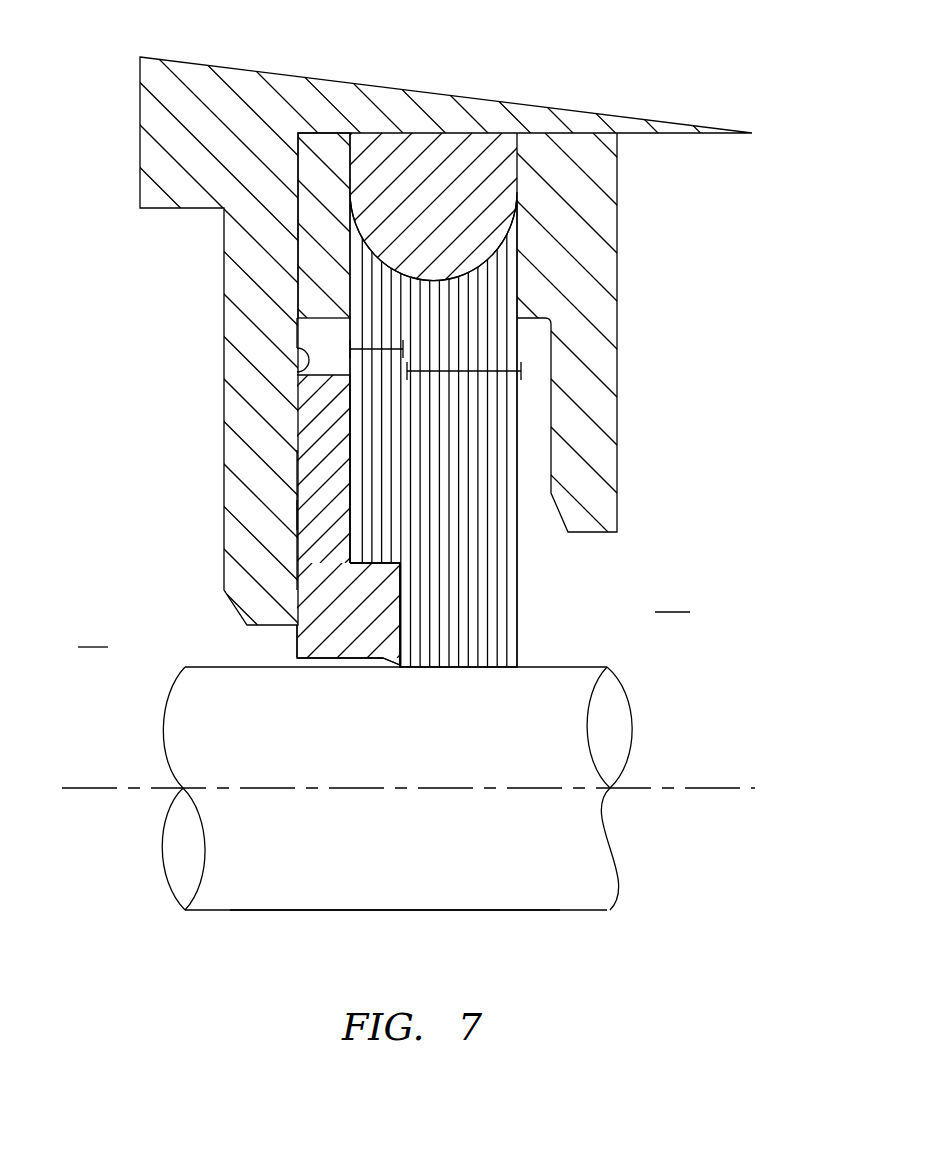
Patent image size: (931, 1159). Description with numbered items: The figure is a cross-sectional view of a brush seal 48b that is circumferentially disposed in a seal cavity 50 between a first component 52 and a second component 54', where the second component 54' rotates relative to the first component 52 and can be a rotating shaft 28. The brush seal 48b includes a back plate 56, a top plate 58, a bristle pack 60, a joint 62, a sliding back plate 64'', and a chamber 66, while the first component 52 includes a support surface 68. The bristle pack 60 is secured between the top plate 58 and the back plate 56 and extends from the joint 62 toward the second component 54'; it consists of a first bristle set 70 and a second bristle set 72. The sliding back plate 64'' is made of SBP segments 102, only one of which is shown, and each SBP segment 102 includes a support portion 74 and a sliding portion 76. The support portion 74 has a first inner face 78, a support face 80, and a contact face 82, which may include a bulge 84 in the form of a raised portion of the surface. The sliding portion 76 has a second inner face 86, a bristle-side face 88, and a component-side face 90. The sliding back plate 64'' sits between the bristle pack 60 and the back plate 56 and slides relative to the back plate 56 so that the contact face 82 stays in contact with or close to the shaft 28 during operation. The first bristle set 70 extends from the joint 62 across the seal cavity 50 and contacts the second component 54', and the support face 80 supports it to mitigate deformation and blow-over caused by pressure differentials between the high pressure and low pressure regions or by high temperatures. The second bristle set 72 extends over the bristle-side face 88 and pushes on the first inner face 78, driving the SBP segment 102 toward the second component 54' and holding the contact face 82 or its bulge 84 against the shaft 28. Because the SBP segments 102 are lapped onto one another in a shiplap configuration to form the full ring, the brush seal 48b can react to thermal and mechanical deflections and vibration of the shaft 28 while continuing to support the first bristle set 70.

The shaft 28 is at (216, 767).
The brush seal 48b is at (664, 373).
The seal cavity 50 is at (600, 630).
The first component 52 is at (249, 312).
The second component 54' is at (379, 950).
The back plate 56 is at (316, 150).
The top plate 58 is at (554, 292).
The bristle pack 60 is at (532, 552).
The joint 62 is at (427, 197).
The sliding back plate (SBP) 64'' is at (230, 640).
The chamber 66 is at (297, 333).
The support surface 68 is at (300, 377).
The first bristle set 70 is at (473, 372).
The second bristle set 72 is at (381, 347).
The support portion 74 is at (336, 627).
The sliding portion 76 is at (307, 452).
The first inner face 78 is at (380, 563).
The support face 80 is at (402, 648).
The contact face 82 is at (328, 660).
The bulge 84 is at (390, 660).
The second inner face 86 is at (328, 372).
The bristle-side face 88 is at (352, 400).
The component-side face 90 is at (297, 488).
The SBP segment 102 is at (320, 530).